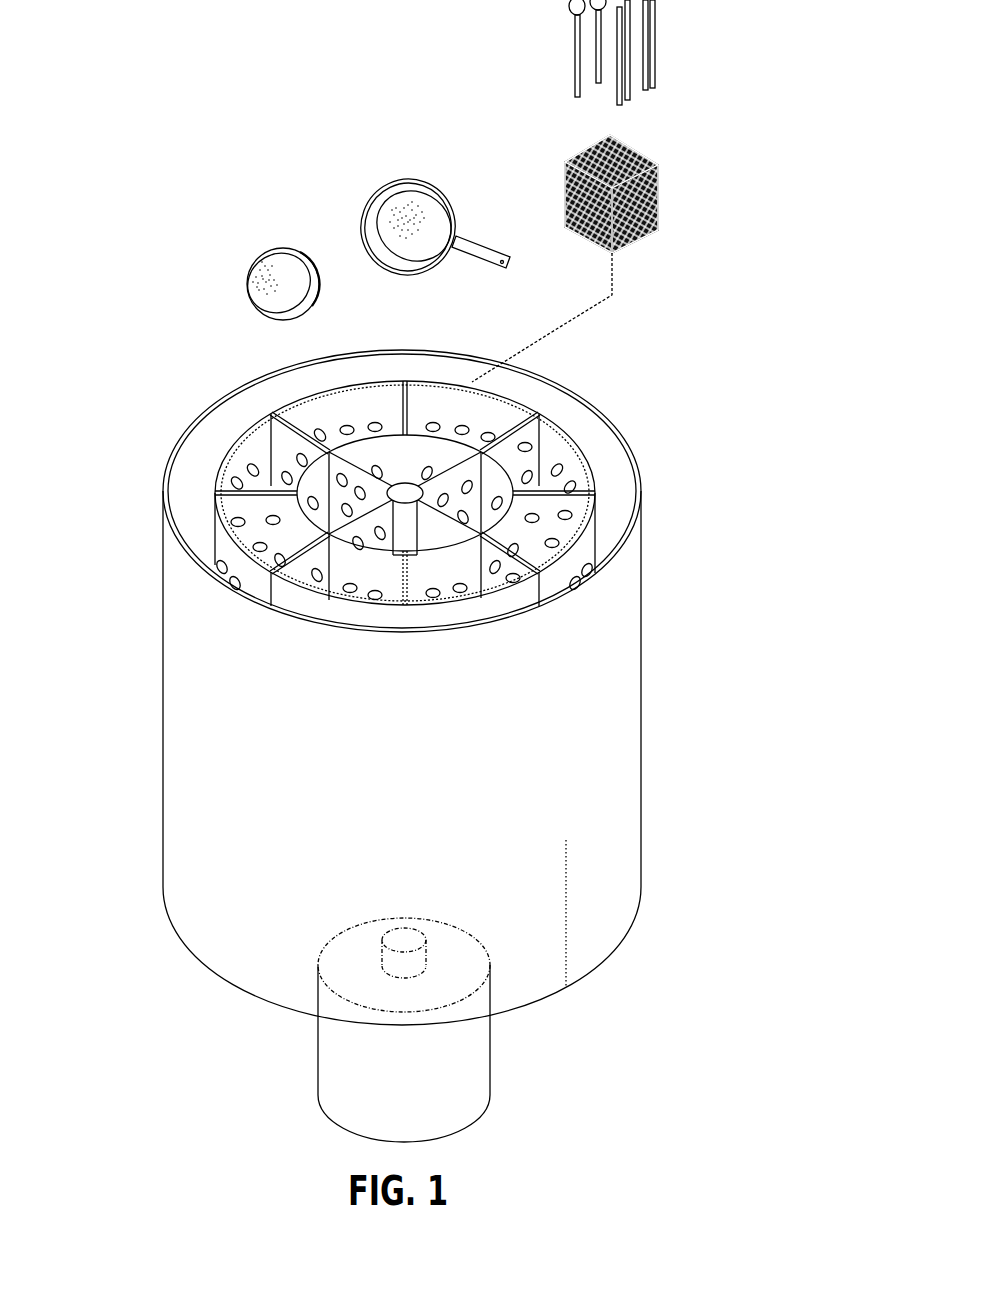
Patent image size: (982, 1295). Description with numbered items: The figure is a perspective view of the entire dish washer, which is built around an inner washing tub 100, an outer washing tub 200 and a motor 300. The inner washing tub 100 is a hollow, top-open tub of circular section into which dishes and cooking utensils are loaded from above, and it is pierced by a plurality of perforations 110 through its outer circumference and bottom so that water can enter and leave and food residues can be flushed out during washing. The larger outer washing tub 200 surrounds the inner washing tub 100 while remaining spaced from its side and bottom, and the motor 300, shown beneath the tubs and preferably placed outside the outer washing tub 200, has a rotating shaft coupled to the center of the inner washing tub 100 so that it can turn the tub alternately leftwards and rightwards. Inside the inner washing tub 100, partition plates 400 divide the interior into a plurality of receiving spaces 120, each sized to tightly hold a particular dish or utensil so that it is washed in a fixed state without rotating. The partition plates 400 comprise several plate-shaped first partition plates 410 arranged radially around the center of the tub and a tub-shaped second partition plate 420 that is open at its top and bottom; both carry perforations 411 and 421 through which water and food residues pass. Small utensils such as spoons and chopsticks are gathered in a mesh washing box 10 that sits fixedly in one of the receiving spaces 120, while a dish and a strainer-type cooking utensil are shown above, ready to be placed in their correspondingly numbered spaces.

The washing box 10 is at (660, 186).
The inner washing tub 100 is at (283, 560).
The perforations 110 is at (405, 560).
The receiving space 120 is at (253, 527).
The outer washing tub 200 is at (185, 760).
The motor 300 is at (470, 1064).
The partition plate 400 is at (449, 477).
The first partition plate 410 is at (540, 440).
The perforations 411 is at (330, 450).
The second partition plate 420 is at (545, 527).
The perforations 421 is at (222, 438).